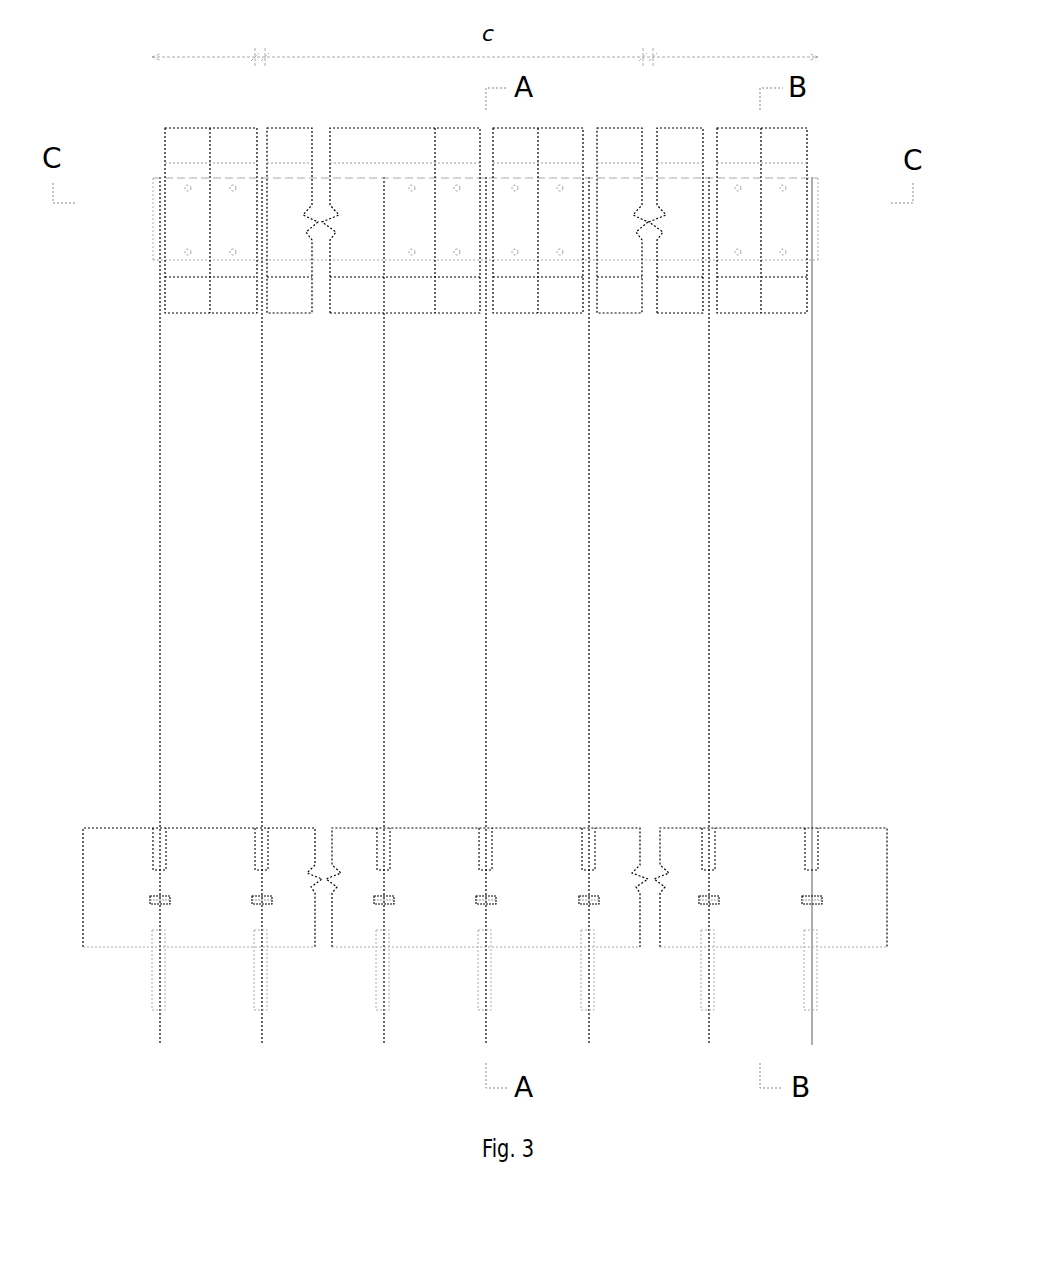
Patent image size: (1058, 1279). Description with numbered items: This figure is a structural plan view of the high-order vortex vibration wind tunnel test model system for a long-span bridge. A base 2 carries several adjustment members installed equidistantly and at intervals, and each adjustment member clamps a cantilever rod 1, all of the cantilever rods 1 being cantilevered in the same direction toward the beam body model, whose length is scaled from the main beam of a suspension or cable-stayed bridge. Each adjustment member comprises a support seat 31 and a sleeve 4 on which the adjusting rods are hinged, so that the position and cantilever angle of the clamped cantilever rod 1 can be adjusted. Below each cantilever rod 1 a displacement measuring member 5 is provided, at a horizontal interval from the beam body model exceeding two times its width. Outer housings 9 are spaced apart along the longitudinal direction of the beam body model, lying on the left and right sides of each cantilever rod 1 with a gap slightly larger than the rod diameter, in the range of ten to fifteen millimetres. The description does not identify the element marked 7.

The cantilever rod 1 is at (815, 612).
The base 2 is at (850, 828).
The support seat 31 is at (820, 897).
The sleeve 4 is at (818, 970).
The displacement measuring member 5 is at (152, 852).
The top connecting band 7 is at (152, 218).
The outer housings 9 is at (292, 127).